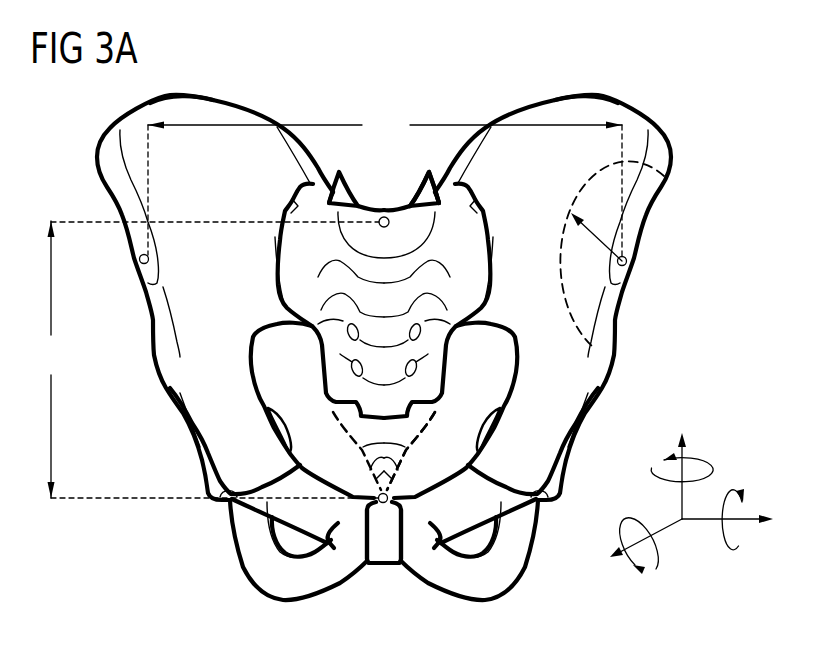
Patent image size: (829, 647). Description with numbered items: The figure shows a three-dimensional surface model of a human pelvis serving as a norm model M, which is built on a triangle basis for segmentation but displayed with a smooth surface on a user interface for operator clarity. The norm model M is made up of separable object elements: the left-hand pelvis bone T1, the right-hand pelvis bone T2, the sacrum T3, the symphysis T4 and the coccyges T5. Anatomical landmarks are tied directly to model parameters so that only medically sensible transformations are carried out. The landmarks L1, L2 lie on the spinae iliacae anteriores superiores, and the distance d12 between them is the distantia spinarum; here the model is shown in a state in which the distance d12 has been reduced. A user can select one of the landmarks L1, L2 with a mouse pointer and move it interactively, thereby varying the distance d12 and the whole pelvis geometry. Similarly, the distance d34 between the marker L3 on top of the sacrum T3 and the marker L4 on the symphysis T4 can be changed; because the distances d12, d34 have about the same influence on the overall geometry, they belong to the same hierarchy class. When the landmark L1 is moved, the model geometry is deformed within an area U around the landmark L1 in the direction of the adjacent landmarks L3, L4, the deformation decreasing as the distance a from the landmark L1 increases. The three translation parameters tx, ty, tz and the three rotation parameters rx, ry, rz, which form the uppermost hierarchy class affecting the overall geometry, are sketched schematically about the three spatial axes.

The norm model M is at (671, 110).
The left-hand pelvis bone T1 is at (590, 113).
The right-hand pelvis bone T2 is at (173, 110).
The sacrum T3 is at (422, 197).
The symphysis T4 is at (383, 557).
The coccyges T5 is at (411, 430).
The anatomical landmark L1 is at (628, 263).
The anatomical landmark L2 is at (139, 262).
The anatomical marker L3 is at (387, 226).
The anatomical marker L4 is at (377, 497).
The distance d12 is at (385, 184).
The distance d34 is at (206, 359).
The area U is at (580, 190).
The distance a is at (597, 243).
The translation parameter tx is at (739, 521).
The translation parameter ty is at (686, 457).
The translation parameter tz is at (635, 553).
The rotation parameter rx is at (731, 490).
The rotation parameter ry is at (652, 474).
The rotation parameter rz is at (657, 572).